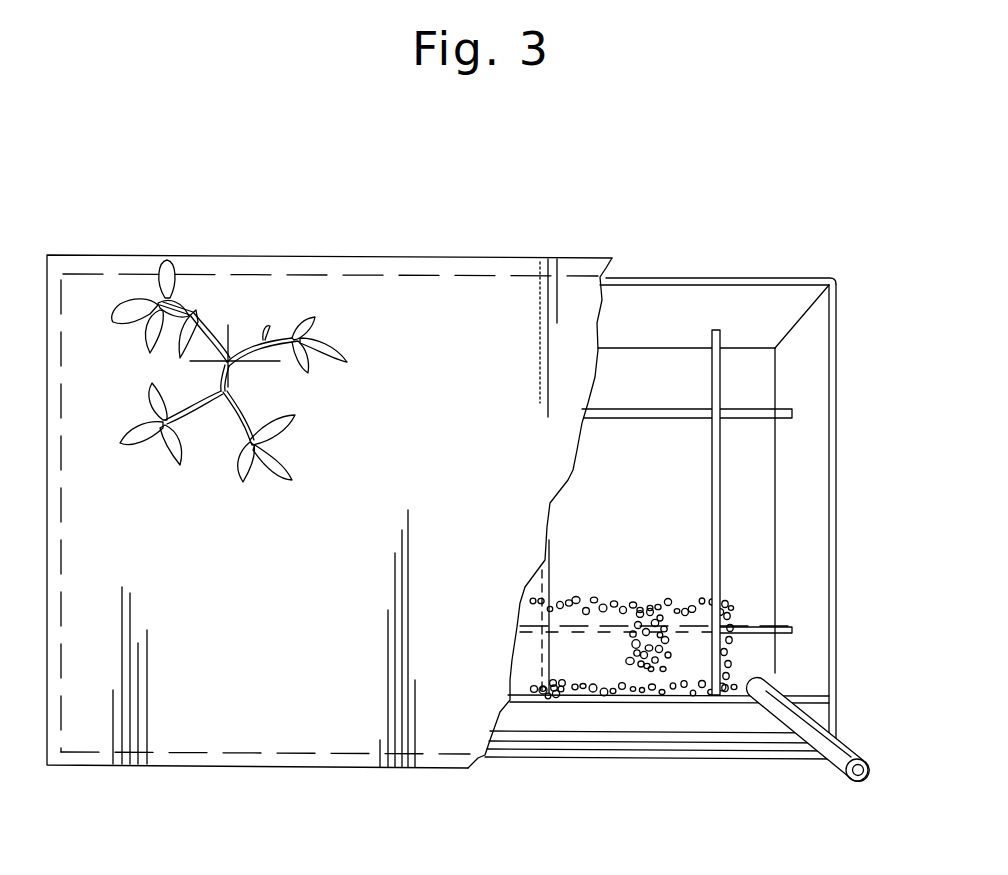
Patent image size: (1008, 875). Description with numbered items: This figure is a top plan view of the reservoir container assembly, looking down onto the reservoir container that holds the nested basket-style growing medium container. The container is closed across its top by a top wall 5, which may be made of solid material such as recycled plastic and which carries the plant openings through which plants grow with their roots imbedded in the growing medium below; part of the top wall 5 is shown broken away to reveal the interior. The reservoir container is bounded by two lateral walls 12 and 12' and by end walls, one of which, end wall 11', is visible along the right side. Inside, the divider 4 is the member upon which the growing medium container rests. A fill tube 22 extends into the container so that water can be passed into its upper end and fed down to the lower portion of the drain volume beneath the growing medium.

The top wall 5 is at (478, 315).
The lateral wall 12' is at (724, 438).
The end wall 11' is at (871, 521).
The divider 4 is at (727, 468).
The fill tube 22 is at (847, 749).
The lateral wall 12 is at (660, 759).